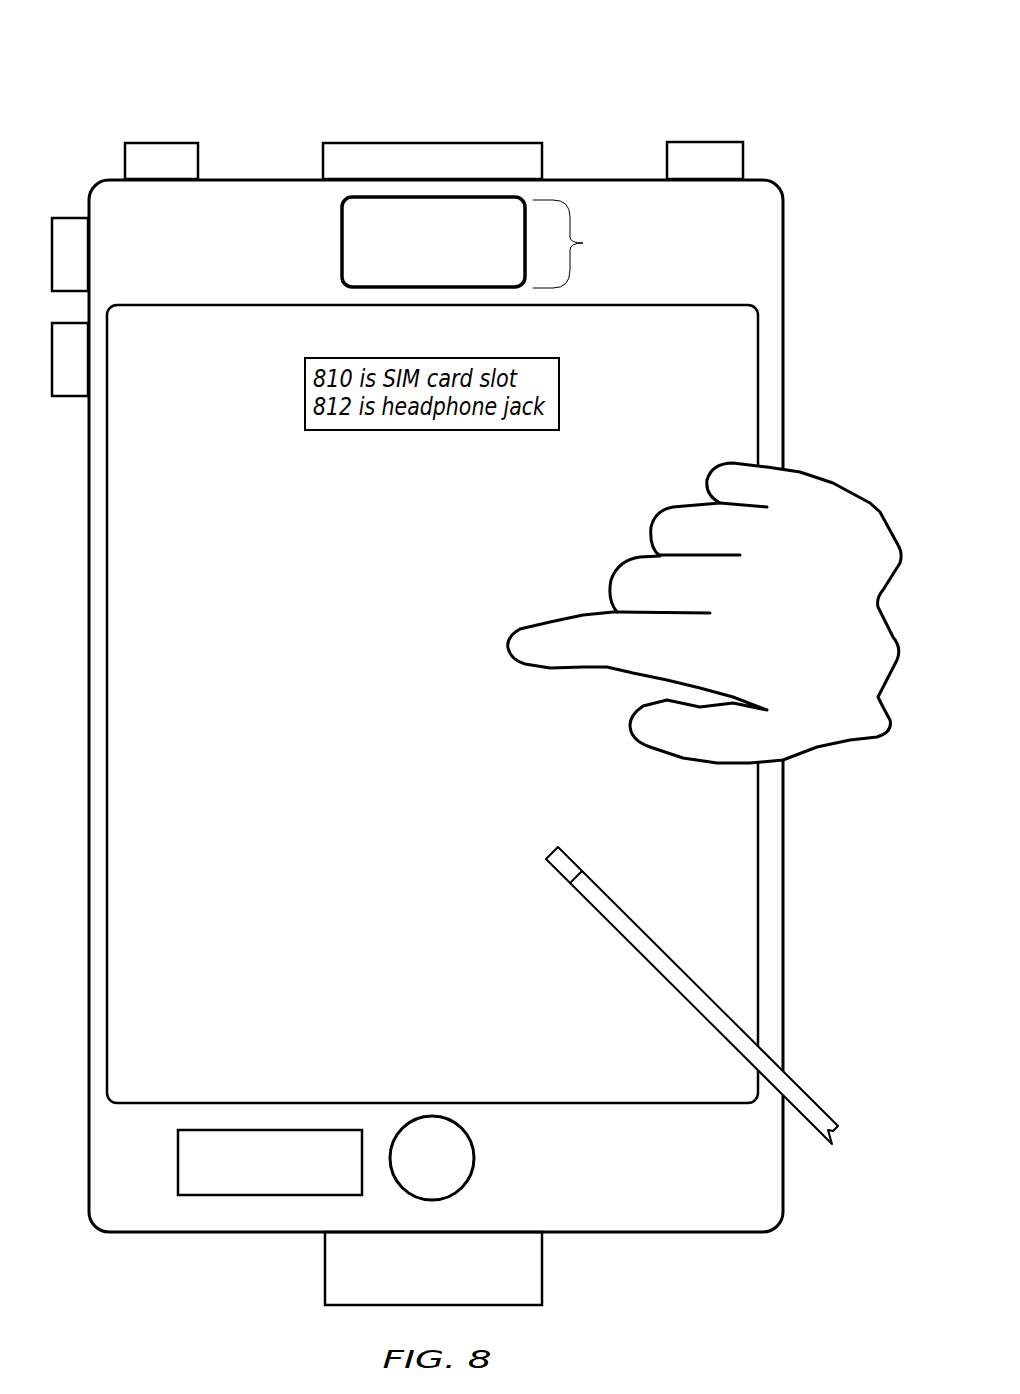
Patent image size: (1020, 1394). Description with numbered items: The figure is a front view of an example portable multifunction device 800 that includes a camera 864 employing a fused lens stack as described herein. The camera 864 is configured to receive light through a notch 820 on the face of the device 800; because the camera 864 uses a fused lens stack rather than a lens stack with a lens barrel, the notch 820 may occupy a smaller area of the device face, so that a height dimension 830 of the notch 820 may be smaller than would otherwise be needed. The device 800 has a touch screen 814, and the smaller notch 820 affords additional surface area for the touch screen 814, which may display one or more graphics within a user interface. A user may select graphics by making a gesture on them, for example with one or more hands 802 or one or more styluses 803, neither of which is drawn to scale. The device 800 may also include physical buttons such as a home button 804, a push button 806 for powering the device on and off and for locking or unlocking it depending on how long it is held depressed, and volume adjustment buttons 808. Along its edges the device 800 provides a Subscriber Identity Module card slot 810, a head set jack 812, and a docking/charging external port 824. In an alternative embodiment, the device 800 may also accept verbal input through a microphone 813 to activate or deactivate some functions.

The portable multifunction device 800 is at (660, 116).
The hand 802 is at (802, 615).
The stylus 803 is at (548, 848).
The home button 804 is at (452, 1184).
The push button 806 is at (142, 171).
The volume adjustment button 808 is at (81, 380).
The Subscriber Identity Module (SIM) card slot 810 is at (413, 171).
The head set jack 812 is at (685, 171).
The microphone 813 is at (251, 1184).
The touch screen 814 is at (414, 742).
The notch 820 is at (341, 253).
The docking/charging external port 824 is at (413, 1289).
The height dimension 830 is at (583, 243).
The camera 864 is at (452, 277).